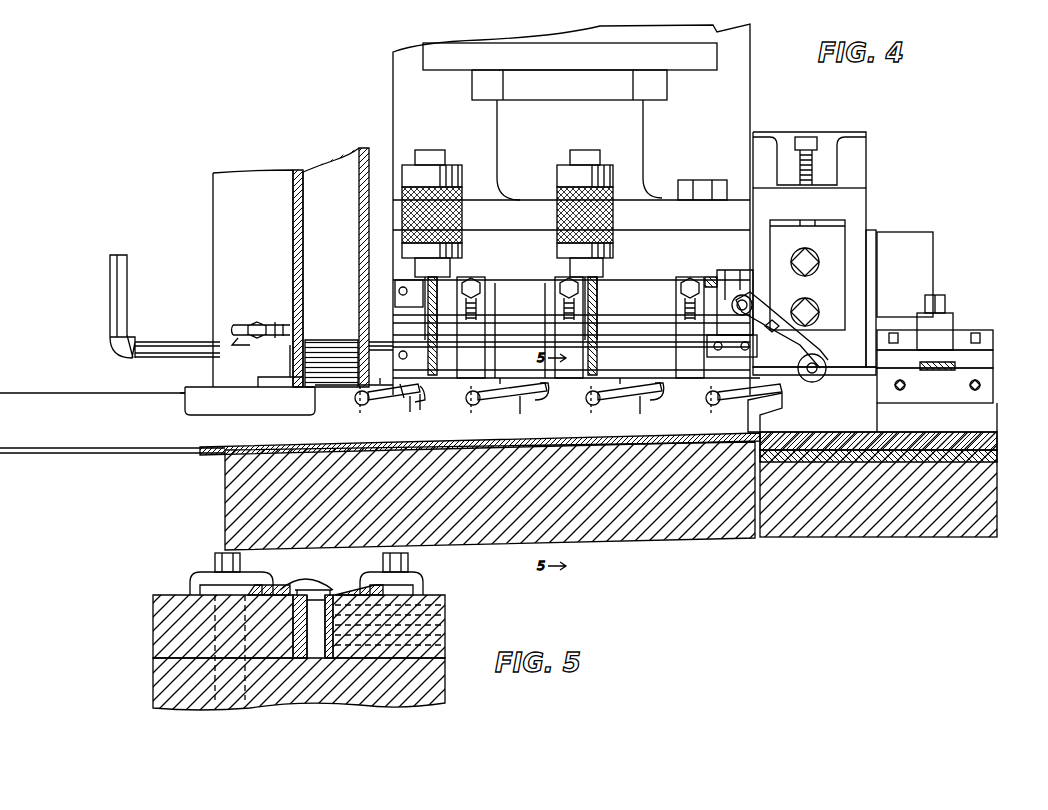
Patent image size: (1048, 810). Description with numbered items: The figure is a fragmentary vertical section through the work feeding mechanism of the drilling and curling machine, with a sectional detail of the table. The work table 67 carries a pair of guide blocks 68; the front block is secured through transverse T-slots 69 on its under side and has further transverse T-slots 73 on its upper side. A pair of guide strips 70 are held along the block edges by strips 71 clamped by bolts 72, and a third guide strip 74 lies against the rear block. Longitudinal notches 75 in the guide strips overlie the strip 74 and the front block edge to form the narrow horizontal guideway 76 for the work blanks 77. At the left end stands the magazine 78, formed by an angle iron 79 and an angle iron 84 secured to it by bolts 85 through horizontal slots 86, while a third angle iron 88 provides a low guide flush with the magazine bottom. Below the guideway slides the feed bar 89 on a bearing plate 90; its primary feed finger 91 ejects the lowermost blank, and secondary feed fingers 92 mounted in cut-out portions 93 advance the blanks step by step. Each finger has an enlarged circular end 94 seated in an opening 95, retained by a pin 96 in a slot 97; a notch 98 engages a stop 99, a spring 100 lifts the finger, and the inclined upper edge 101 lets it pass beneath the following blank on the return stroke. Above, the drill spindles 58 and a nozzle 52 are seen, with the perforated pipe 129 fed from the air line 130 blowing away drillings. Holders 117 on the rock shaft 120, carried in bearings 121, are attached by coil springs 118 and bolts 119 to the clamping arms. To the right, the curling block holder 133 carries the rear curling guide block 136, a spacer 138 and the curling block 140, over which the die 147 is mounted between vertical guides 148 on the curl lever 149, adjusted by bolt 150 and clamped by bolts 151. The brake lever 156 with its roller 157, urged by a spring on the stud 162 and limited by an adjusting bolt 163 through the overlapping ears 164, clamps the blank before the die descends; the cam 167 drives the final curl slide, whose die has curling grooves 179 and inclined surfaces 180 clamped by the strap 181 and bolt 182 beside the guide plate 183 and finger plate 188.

In FIG. 4, the nozzle 52 is at (598, 300).
In FIG. 4, the vertical spindle 58 is at (432, 158).
In FIG. 4, the work table 67 is at (696, 528).
In FIG. 5, the work table 67 is at (435, 683).
In FIG. 5, the guide block 68 is at (172, 597).
In FIG. 5, the transverse T-slot 69 is at (447, 645).
In FIG. 5, the guide strip 70 is at (292, 578).
In FIG. 5, the strip 71 is at (198, 573).
In FIG. 5, the bolt 72 is at (250, 582).
In FIG. 5, the transverse T-slot 73 is at (455, 604).
In FIG. 5, the third guide strip 74 is at (260, 685).
In FIG. 5, the longitudinal notch 75 is at (314, 595).
In FIG. 5, the horizontal guideway 76 is at (320, 595).
In FIG. 4, the work blank 77 is at (333, 340).
In FIG. 4, the magazine 78 is at (289, 170).
In FIG. 4, the angle iron 79 is at (362, 292).
In FIG. 4, the angle iron 84 is at (300, 225).
In FIG. 4, the bolt 85 is at (245, 325).
In FIG. 4, the horizontal slot 86 is at (247, 340).
In FIG. 4, the third angle iron 88 is at (290, 368).
In FIG. 4, the feed bar 89 is at (112, 446).
In FIG. 4, the bearing plate 90 is at (215, 455).
In FIG. 5, the bearing plate 90 is at (285, 660).
In FIG. 4, the primary feed finger 91 is at (215, 405).
In FIG. 4, the secondary feed finger 92 is at (372, 402).
In FIG. 4, the cut-out portion 93 is at (408, 402).
In FIG. 4, the enlarged circular end 94 is at (358, 405).
In FIG. 4, the opening 95 is at (478, 406).
In FIG. 4, the pin 96 is at (350, 395).
In FIG. 4, the slot 97 is at (710, 412).
In FIG. 4, the notch 98 is at (418, 406).
In FIG. 4, the stop 99 is at (424, 396).
In FIG. 4, the spring 100 is at (524, 404).
In FIG. 4, the inclined upper edge 101 is at (492, 386).
In FIG. 4, the holder 117 is at (545, 300).
In FIG. 4, the coil spring 118 is at (468, 282).
In FIG. 4, the bolt 119 is at (708, 276).
In FIG. 4, the rock shaft 120 is at (650, 312).
In FIG. 4, the bearing 121 is at (418, 290).
In FIG. 4, the perforated pipe 129 is at (388, 344).
In FIG. 4, the air line 130 is at (124, 285).
In FIG. 4, the curling block holder 133 is at (945, 520).
In FIG. 4, the rear curling guide block 136 is at (975, 425).
In FIG. 4, the spacer 138 is at (990, 442).
In FIG. 4, the curling block 140 is at (857, 385).
In FIG. 4, the die 147 is at (888, 330).
In FIG. 4, the vertical guide 148 is at (750, 222).
In FIG. 4, the curl lever 149 is at (863, 165).
In FIG. 4, the bolt 150 is at (812, 137).
In FIG. 4, the bolt 151 is at (812, 303).
In FIG. 4, the lever 156 is at (805, 262).
In FIG. 4, the roller 157 is at (828, 365).
In FIG. 4, the stud 162 is at (766, 318).
In FIG. 4, the adjusting bolt 163 is at (742, 272).
In FIG. 4, the overlapping ear 164 is at (745, 292).
In FIG. 4, the cam 167 is at (933, 397).
In FIG. 4, the curling groove 179 is at (990, 362).
In FIG. 4, the inclined surface 180 is at (985, 337).
In FIG. 4, the strap 181 is at (952, 325).
In FIG. 4, the bolt 182 is at (944, 302).
In FIG. 4, the guide plate 183 is at (988, 390).
In FIG. 4, the finger plate 188 is at (910, 335).